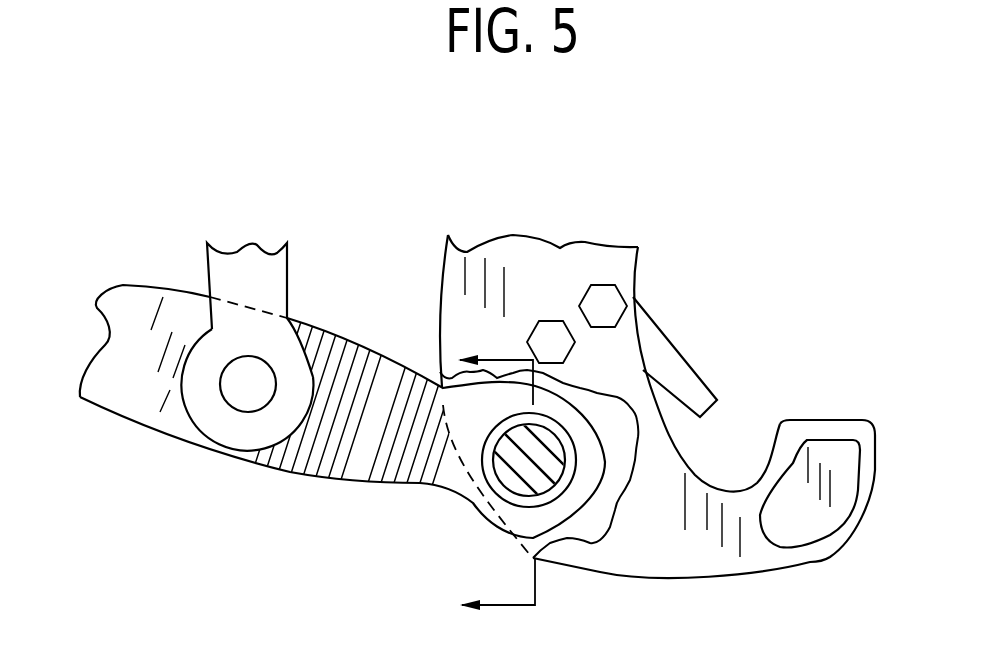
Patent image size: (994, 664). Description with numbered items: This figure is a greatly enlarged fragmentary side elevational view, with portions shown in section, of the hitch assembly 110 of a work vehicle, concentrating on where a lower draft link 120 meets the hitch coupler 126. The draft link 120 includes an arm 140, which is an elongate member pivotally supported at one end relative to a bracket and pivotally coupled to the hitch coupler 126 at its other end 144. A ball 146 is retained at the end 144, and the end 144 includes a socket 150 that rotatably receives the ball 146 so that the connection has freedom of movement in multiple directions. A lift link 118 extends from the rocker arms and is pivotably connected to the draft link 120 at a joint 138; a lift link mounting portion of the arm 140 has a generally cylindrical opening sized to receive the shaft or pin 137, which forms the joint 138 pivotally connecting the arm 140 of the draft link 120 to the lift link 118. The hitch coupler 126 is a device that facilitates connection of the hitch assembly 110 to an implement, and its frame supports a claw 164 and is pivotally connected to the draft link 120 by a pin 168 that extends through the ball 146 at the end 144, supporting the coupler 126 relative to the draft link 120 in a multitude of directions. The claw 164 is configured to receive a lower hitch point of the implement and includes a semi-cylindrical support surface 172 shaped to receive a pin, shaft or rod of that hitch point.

The hitch assembly 110 is at (258, 193).
The lift link 118 is at (263, 280).
The draft link 120 is at (110, 413).
The hitch coupler 126 is at (638, 267).
The shaft or pin 137 is at (237, 380).
The joint 138 is at (330, 330).
The arm 140 is at (345, 478).
The end 144 is at (597, 420).
The ball 146 is at (503, 512).
The socket 150 is at (497, 495).
The claw 164 is at (805, 562).
The pin 168 is at (557, 493).
The semi-cylindrical support surface 172 is at (743, 467).